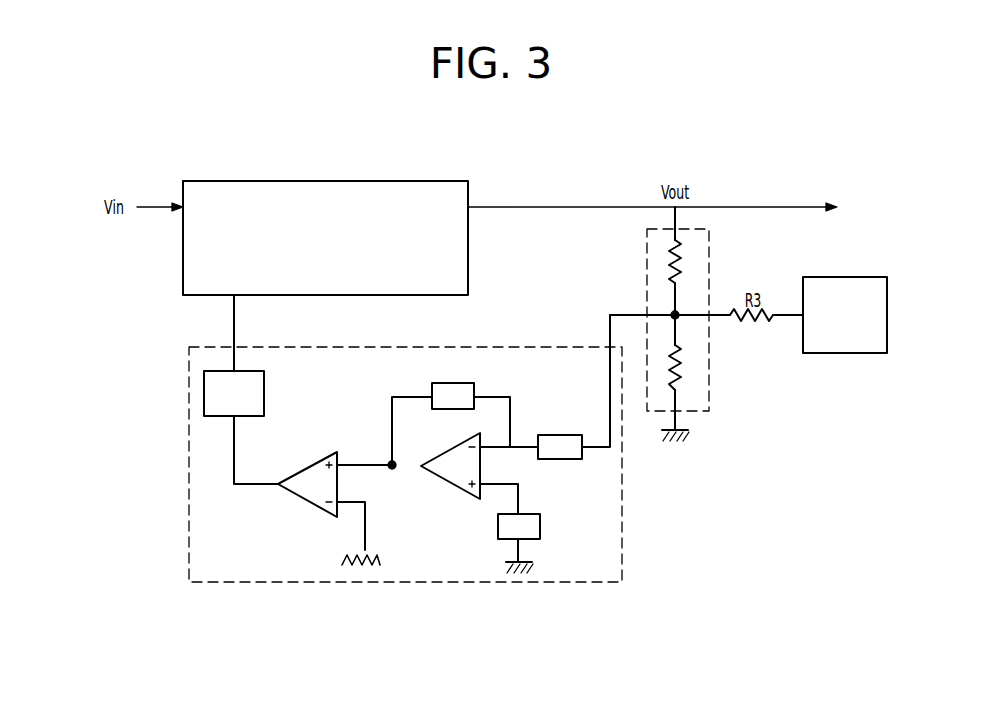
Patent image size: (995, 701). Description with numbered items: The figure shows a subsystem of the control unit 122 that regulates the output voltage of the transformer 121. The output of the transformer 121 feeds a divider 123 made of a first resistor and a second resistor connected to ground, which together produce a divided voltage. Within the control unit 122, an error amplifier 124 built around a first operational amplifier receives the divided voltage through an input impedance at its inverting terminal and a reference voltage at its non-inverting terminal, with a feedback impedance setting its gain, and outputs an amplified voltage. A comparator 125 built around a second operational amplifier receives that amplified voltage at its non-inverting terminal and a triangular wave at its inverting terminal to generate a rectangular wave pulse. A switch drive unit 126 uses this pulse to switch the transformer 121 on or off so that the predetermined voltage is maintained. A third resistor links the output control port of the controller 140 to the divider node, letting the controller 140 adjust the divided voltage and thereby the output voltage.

The transformer 121 is at (310, 181).
The control unit 122 is at (372, 582).
The divider 123 is at (647, 270).
The error amplifier 124 is at (449, 483).
The comparator 125 is at (305, 504).
The switch drive unit 126 is at (264, 393).
The controller 140 is at (843, 353).